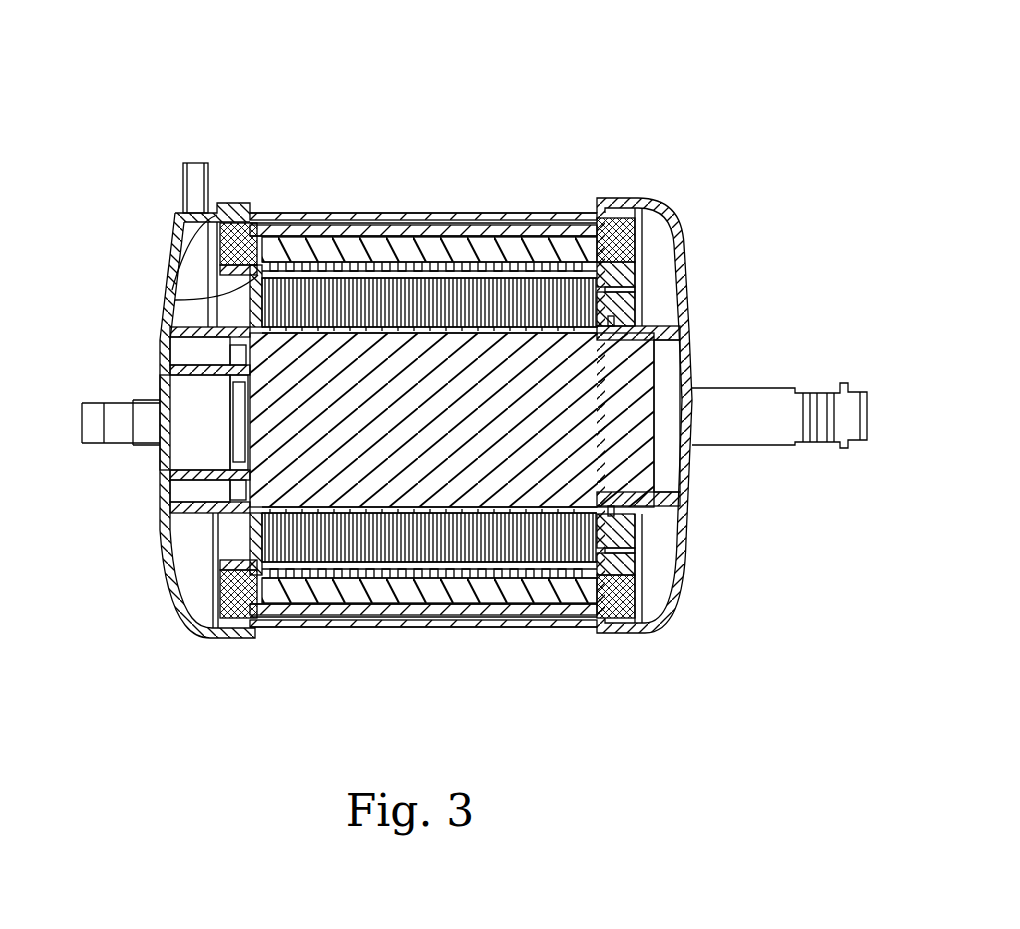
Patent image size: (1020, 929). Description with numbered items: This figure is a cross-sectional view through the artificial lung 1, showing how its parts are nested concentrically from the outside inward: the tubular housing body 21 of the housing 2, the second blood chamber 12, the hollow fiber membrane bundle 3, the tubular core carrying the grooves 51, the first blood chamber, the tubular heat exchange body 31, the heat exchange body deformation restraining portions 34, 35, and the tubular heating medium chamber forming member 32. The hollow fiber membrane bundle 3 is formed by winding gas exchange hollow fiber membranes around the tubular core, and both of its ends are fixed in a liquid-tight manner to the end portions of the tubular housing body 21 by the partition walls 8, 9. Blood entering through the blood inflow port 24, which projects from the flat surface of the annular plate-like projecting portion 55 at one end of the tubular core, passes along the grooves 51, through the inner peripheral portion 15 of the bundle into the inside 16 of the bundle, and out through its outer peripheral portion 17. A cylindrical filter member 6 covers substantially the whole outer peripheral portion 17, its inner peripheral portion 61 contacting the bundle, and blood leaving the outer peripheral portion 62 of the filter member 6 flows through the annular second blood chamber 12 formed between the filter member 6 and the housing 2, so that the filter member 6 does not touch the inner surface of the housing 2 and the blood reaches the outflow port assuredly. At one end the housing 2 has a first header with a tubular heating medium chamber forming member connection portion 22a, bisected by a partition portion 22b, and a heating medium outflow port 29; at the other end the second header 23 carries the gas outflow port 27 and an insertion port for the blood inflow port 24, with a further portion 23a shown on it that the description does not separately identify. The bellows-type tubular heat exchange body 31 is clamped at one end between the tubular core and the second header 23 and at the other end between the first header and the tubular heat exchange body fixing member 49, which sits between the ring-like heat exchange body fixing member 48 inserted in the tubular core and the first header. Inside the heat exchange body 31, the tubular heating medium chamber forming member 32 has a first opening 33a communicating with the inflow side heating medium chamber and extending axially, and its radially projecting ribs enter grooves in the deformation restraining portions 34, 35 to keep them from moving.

The artificial lung 1 is at (712, 96).
The housing 2 is at (619, 192).
The tubular hollow fiber membrane bundle 3 is at (560, 240).
The filter member 6 is at (527, 222).
The partition wall 8 is at (258, 622).
The partition wall 9 is at (636, 590).
The second blood chamber 12 is at (463, 625).
The inner peripheral portion 15 is at (177, 300).
The inside 16 is at (265, 232).
The outer peripheral portion 17 is at (333, 222).
The tubular housing body 21 is at (497, 213).
The heating medium chamber forming member connection portion 22a is at (665, 495).
The partition portion 22b is at (672, 375).
The second header 23 is at (171, 258).
The bearing holder 23a is at (185, 467).
The blood inflow port 24 is at (95, 415).
The gas outflow port 27 is at (197, 173).
The heating medium outflow port 29 is at (830, 430).
The tubular heat exchange body 31 is at (412, 562).
The tubular heating medium chamber forming member 32 is at (392, 350).
The first opening 33a is at (656, 340).
The tubular heat exchange body deformation restraining portion 34 is at (428, 228).
The tubular heat exchange body deformation restraining portion 35 is at (312, 580).
The ring-like heat exchange body fixing member 48 is at (636, 290).
The tubular heat exchange body fixing member 49 is at (650, 318).
The grooves 51 is at (302, 250).
The annular plate-like projecting portion 55 is at (217, 272).
The inner peripheral portion 61 is at (476, 232).
The outer peripheral portion 62 is at (399, 262).